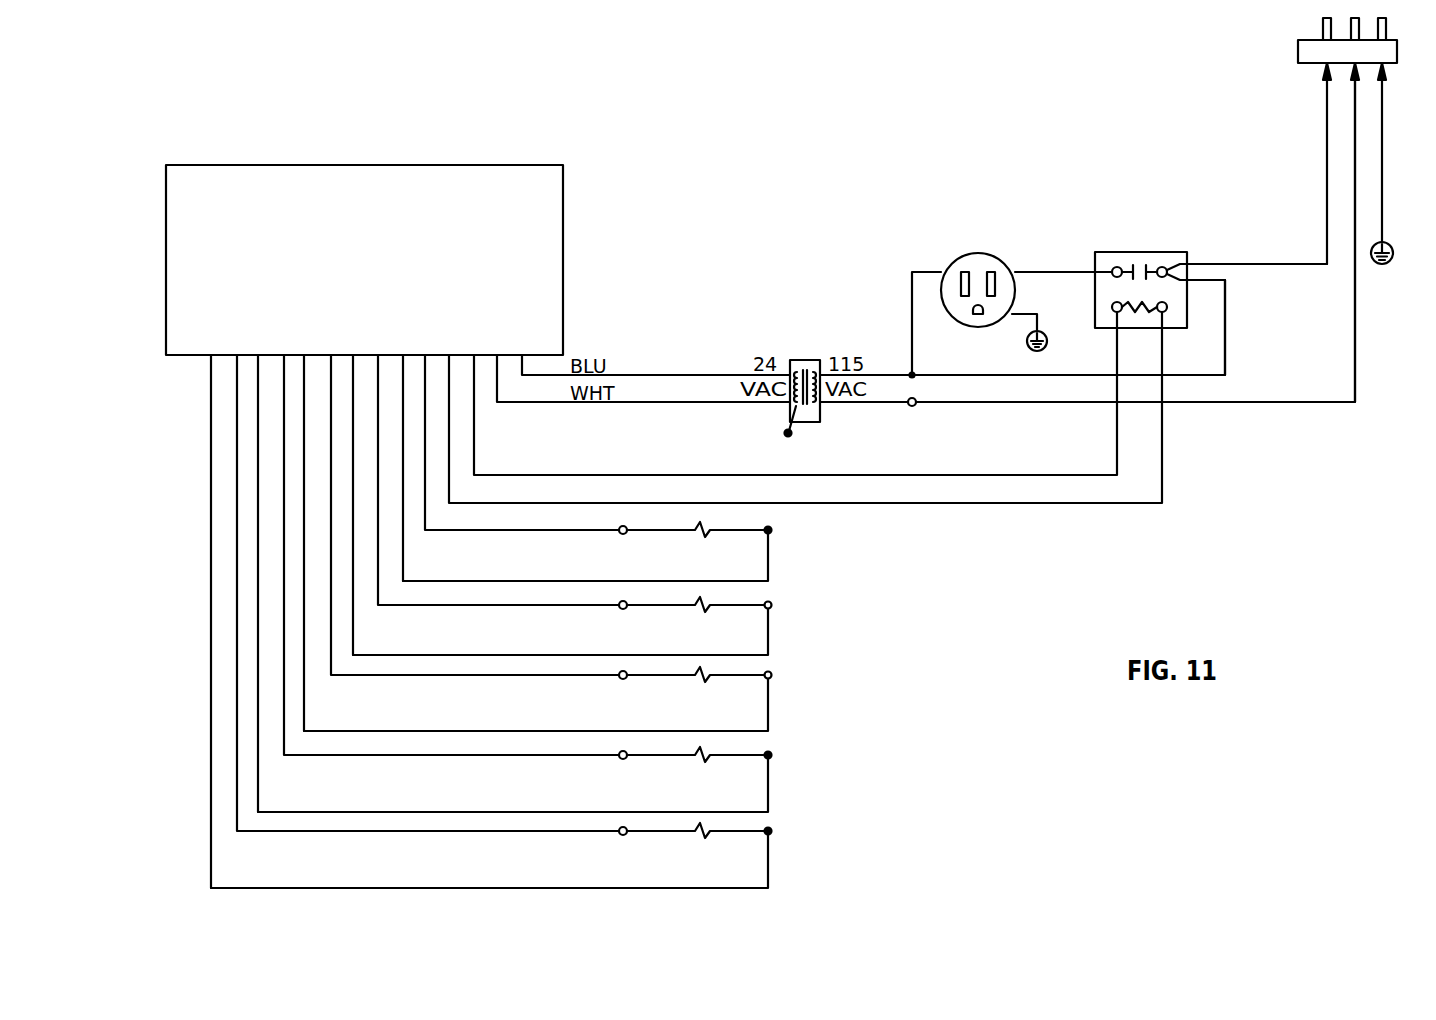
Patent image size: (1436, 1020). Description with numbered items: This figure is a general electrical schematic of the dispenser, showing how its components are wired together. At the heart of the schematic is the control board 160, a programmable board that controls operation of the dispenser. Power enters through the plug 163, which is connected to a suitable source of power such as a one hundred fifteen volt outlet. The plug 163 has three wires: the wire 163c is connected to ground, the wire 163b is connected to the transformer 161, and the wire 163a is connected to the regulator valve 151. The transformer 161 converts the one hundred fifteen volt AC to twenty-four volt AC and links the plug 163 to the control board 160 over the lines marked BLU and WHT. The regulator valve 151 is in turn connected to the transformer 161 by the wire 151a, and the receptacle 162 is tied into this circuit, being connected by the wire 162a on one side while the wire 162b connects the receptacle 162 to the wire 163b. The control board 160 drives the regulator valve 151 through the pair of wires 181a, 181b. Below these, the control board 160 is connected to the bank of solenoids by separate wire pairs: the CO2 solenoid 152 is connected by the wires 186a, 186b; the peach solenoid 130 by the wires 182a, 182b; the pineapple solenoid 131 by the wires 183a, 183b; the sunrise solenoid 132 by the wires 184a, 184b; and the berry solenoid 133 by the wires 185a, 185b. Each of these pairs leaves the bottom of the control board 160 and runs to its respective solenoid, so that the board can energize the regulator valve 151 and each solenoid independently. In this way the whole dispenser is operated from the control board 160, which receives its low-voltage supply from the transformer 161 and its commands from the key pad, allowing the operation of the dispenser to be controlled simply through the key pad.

The control board 160 is at (563, 270).
The transformer 161 is at (811, 359).
The receptacle 162 is at (967, 256).
The wire 162a is at (1043, 272).
The wire 162b is at (912, 313).
The regulator valve 151 is at (1140, 252).
The wire 151a is at (1225, 341).
The plug 163 is at (1298, 48).
The wire 163a is at (1325, 203).
The wire 163b is at (1353, 270).
The wire 163c is at (1385, 183).
The wire 181a is at (678, 503).
The wire 181b is at (718, 476).
The solenoid 152 is at (706, 530).
The wire 186a is at (463, 581).
The wire 186b is at (463, 528).
The solenoid 130 is at (706, 605).
The wire 182a is at (463, 655).
The wire 182b is at (463, 606).
The solenoid 131 is at (706, 675).
The wire 183a is at (463, 731).
The wire 183b is at (463, 676).
The solenoid 132 is at (706, 755).
The wire 184a is at (463, 812).
The wire 184b is at (463, 756).
The solenoid 133 is at (706, 831).
The wire 185a is at (463, 888).
The wire 185b is at (463, 832).